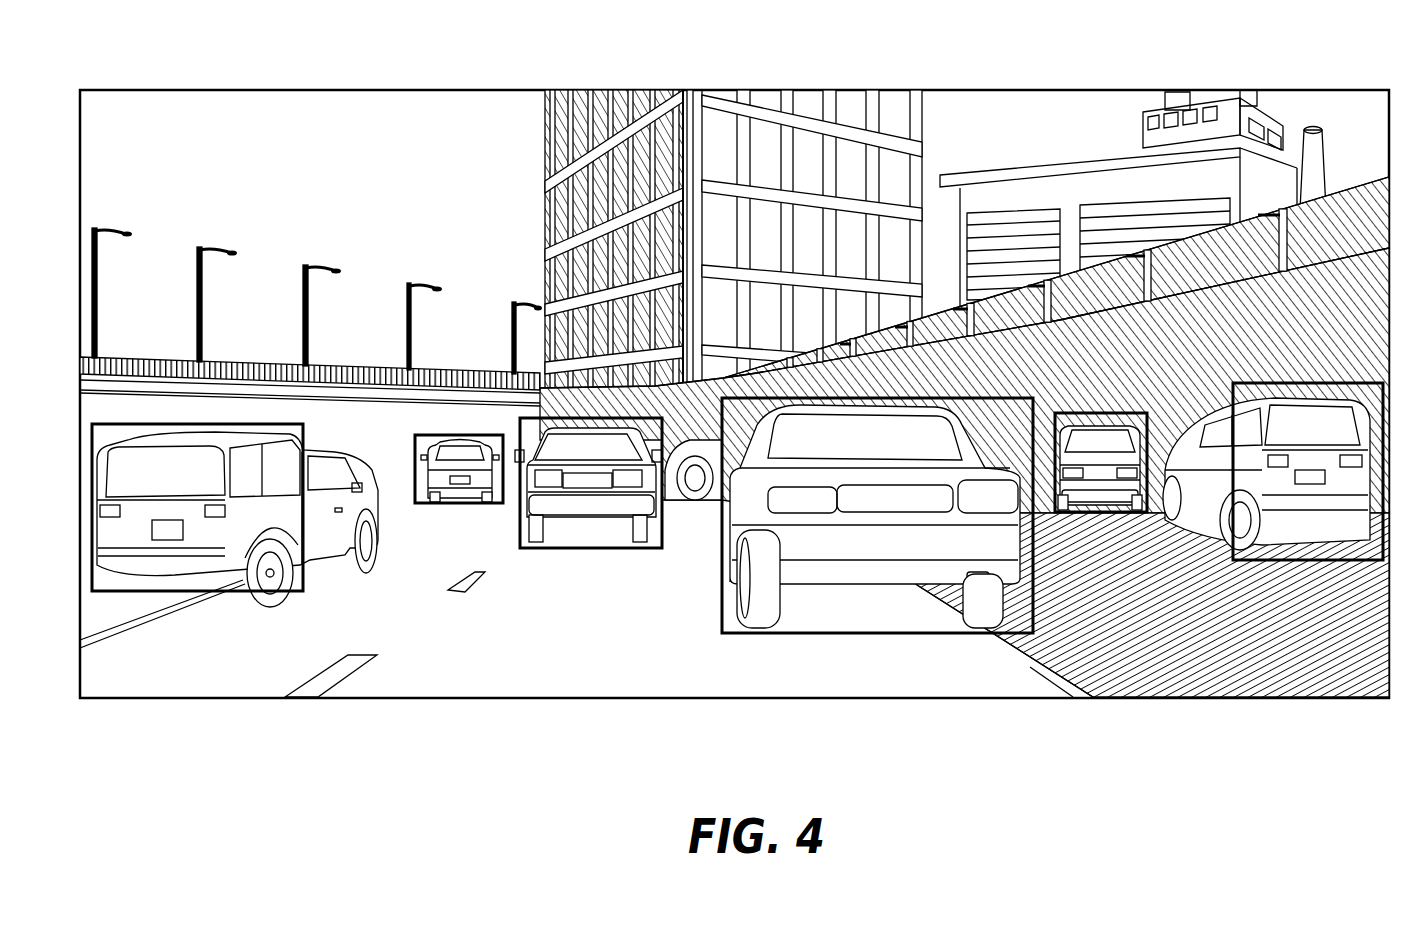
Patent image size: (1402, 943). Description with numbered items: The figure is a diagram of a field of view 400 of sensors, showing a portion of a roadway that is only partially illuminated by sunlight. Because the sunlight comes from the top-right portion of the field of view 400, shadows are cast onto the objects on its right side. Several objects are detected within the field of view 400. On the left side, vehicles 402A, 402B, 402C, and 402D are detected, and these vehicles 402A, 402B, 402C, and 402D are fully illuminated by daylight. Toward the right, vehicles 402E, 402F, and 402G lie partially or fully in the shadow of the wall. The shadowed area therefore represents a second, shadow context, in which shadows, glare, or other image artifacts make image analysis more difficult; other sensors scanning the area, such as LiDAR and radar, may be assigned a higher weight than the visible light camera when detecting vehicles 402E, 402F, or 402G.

The field of view 400 is at (1172, 52).
The vehicle 402A is at (268, 607).
The vehicle 402B is at (460, 492).
The vehicle 402C is at (578, 518).
The vehicle 402D is at (708, 565).
The vehicle 402E is at (684, 440).
The vehicle 402F is at (1090, 513).
The vehicle 402G is at (1297, 395).